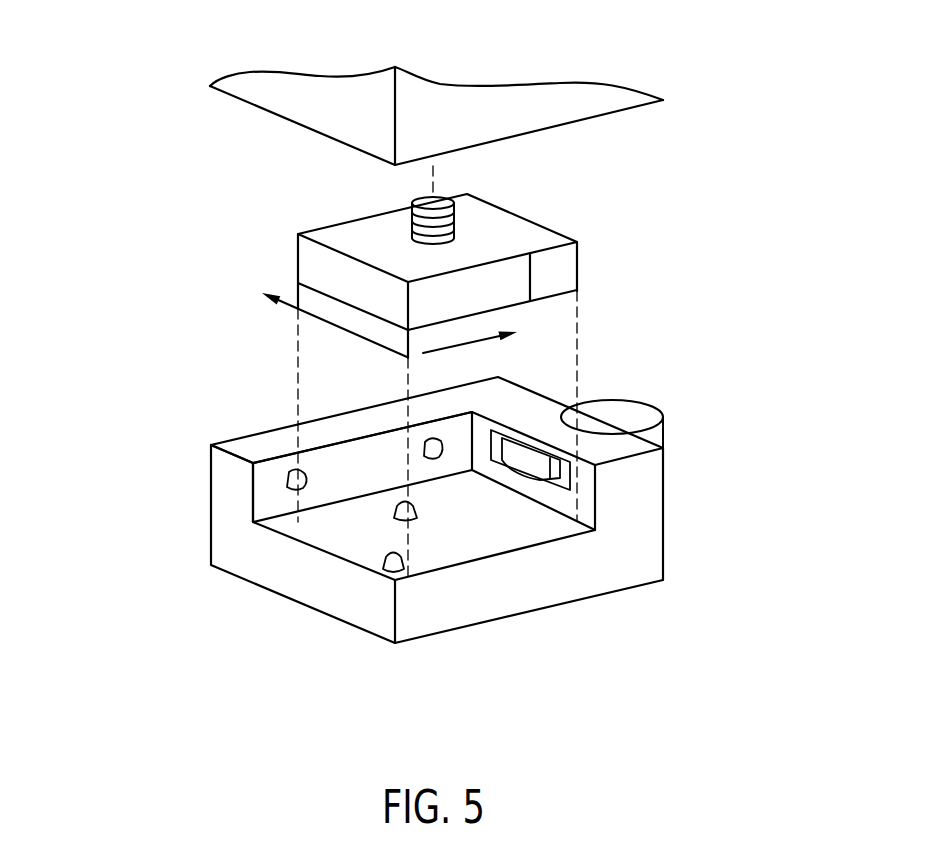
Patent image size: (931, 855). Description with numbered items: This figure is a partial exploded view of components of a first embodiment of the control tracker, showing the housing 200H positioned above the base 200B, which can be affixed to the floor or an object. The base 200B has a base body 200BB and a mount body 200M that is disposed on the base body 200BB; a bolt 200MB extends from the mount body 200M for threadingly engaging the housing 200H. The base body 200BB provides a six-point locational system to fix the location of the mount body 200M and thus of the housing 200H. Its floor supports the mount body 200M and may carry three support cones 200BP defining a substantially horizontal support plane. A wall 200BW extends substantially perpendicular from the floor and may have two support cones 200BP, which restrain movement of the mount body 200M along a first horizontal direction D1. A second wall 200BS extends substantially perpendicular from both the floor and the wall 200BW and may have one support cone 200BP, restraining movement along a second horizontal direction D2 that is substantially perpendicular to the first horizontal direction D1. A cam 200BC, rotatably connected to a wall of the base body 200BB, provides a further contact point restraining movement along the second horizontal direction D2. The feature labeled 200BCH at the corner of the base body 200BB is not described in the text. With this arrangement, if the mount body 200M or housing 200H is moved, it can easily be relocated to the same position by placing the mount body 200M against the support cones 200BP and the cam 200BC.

The housing 200H is at (336, 94).
The mount body 200M is at (348, 231).
The bolt 200MB is at (446, 204).
The base 200B is at (292, 655).
The base body 200BB is at (235, 462).
The wall 200BW is at (260, 487).
The support cones 200BP is at (290, 488).
The cam 200BC is at (365, 552).
The second wall 200BS is at (575, 480).
The base channel hole 200BCH is at (625, 411).
The first horizontal direction D1 is at (321, 318).
The second horizontal direction D2 is at (486, 338).